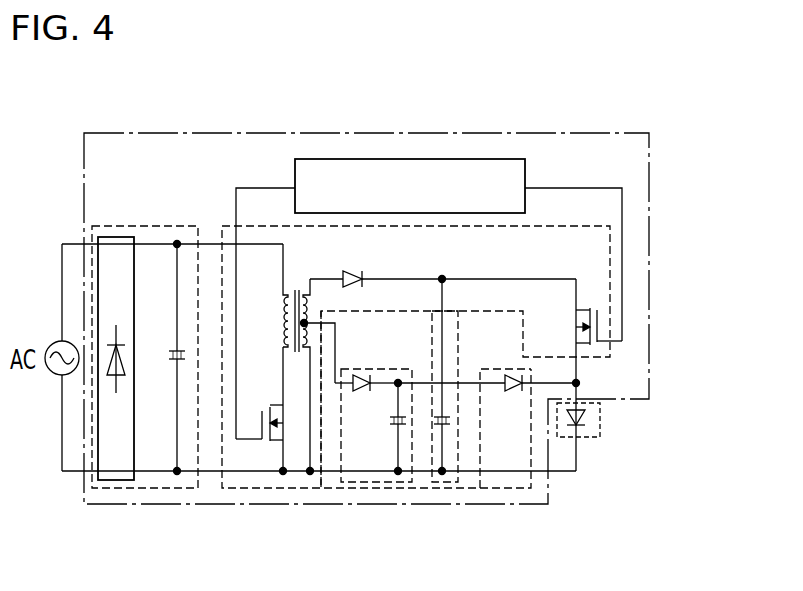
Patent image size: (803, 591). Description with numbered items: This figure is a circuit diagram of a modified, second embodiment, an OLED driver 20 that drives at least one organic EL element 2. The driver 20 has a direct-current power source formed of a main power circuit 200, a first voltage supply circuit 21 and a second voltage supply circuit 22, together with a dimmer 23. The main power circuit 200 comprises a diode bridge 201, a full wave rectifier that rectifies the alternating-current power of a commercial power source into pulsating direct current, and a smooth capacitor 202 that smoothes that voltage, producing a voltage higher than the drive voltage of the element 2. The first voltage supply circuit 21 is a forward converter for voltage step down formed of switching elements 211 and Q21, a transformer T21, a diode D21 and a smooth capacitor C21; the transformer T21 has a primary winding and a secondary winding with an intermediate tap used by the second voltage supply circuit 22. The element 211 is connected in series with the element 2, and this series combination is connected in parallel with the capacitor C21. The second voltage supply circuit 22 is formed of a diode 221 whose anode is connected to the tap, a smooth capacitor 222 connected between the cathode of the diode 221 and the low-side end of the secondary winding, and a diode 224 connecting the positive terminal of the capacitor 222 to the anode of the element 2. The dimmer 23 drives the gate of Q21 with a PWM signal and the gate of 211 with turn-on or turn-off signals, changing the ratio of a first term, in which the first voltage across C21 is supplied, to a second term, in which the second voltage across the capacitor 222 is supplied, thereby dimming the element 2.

The OLED driver 20 is at (649, 133).
The dimmer 23 is at (391, 172).
The main power circuit 200 is at (130, 489).
The diode bridge 201 is at (115, 250).
The smooth capacitor 202 is at (172, 363).
The first voltage supply circuit 21 is at (243, 490).
The second voltage supply circuit 22 is at (378, 489).
The transformer T21 is at (297, 296).
The diode D21 is at (365, 258).
The switching element Q21 is at (267, 403).
The diode 221 is at (360, 375).
The smooth capacitor 222 is at (392, 425).
The diode 224 is at (510, 389).
The smooth capacitor C21 is at (448, 430).
The switching element 211 is at (577, 321).
The organic EL element 2 is at (593, 436).